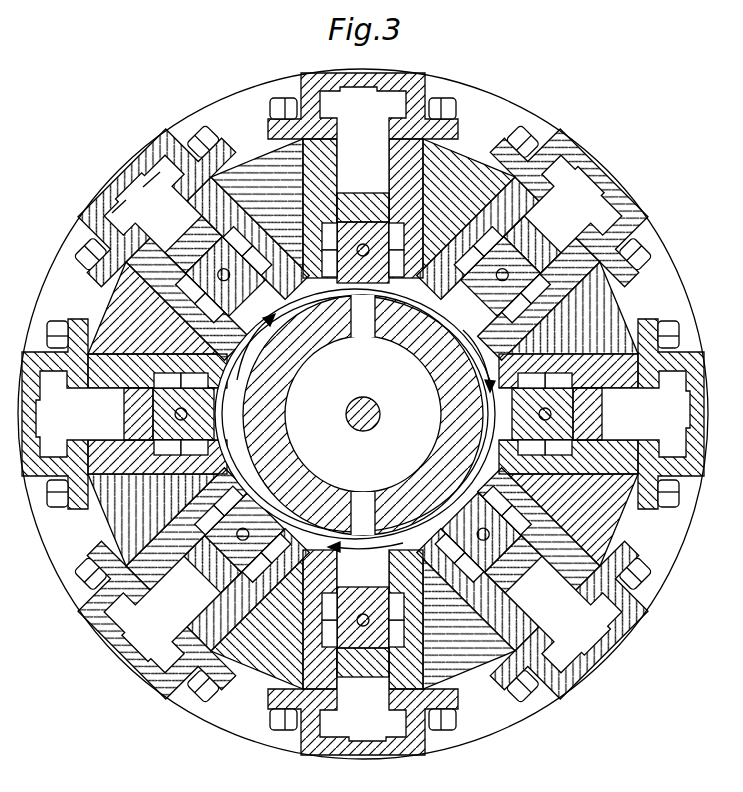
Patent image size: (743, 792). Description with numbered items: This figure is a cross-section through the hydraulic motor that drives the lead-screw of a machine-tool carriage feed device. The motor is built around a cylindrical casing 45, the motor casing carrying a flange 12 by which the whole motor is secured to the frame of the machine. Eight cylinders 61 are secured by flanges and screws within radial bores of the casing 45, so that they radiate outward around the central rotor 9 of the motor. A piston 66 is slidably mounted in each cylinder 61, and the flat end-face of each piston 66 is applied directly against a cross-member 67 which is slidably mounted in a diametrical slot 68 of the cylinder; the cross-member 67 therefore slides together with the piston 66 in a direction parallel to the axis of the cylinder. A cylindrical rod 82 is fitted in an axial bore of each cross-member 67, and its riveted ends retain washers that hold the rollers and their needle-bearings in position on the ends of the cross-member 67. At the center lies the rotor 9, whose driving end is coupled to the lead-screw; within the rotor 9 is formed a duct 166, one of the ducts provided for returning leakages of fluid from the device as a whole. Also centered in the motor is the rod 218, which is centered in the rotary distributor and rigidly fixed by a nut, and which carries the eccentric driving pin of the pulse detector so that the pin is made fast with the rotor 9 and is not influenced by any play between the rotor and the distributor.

The flange 12 is at (228, 107).
The cylindrical casing 45 is at (60, 273).
The cylinder 61 is at (155, 150).
The piston 66 is at (143, 187).
The diametrical slot 68 is at (112, 213).
The cylindrical rod 82 is at (193, 240).
The cross-member 67 is at (355, 420).
The rotor 9 is at (300, 357).
The duct 166 is at (367, 328).
The rod 218 is at (368, 425).